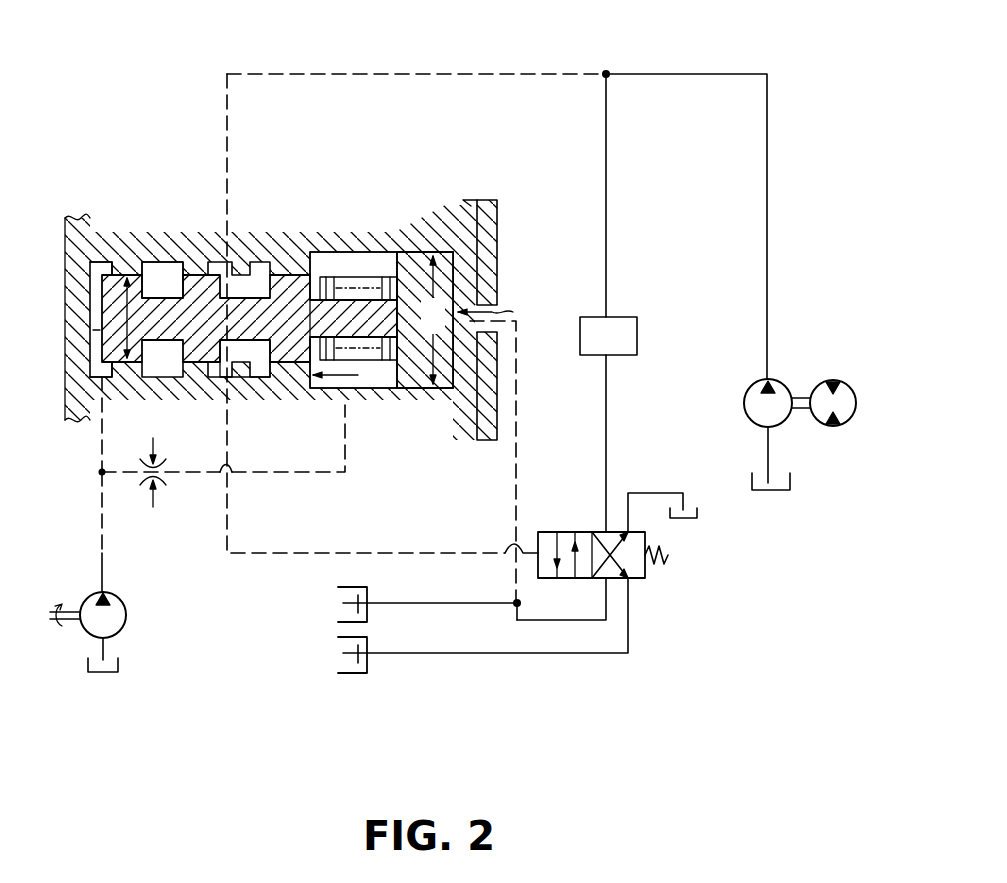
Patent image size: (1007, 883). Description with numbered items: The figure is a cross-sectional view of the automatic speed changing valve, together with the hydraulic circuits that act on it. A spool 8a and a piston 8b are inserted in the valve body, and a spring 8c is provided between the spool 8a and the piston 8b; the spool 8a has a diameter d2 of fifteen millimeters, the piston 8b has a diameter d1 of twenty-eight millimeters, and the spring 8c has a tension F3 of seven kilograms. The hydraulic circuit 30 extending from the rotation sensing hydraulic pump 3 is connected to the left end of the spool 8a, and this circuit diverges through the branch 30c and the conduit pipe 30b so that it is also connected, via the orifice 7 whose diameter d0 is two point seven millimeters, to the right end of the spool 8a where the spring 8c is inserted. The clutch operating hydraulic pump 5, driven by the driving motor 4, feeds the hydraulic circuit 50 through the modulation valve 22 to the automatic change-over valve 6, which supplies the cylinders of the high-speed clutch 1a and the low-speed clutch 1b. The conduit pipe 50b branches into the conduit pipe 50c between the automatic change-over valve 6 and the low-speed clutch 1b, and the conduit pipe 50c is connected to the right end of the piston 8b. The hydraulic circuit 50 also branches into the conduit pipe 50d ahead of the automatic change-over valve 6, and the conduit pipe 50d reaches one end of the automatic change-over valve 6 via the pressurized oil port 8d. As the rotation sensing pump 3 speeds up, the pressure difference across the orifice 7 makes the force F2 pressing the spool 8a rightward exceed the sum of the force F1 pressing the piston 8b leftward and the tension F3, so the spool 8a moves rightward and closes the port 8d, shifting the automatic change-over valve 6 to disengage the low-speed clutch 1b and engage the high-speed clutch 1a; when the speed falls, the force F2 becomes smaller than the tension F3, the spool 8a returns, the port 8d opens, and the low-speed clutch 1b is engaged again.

The high-speed clutch 1a is at (338, 673).
The low-speed clutch 1b is at (338, 618).
The rotation sensing hydraulic pump 3 is at (127, 612).
The clutch operating hydraulic pump driving motor 4 is at (843, 382).
The clutch operating hydraulic pump 5 is at (787, 386).
The automatic change-over valve 6 is at (582, 532).
The orifice 7 is at (158, 458).
The spool 8a is at (132, 276).
The piston 8b is at (430, 254).
The spring 8c is at (365, 278).
The pressurized oil port 8d is at (240, 380).
The modulation valve 22 is at (637, 345).
The hydraulic circuit 30 is at (98, 535).
The conduit pipe 30b is at (286, 474).
The branch line 30c is at (97, 460).
The hydraulic circuit 50 is at (682, 74).
The conduit pipe 50b is at (570, 622).
The conduit pipe 50c is at (522, 414).
The conduit pipe 50d is at (325, 74).
The force F1 is at (500, 301).
The force F2 is at (93, 330).
The tension of the spring F3 is at (351, 377).
The diameter of the orifice d0 is at (142, 524).
The diameter of the piston d1 is at (435, 320).
The diameter of the spool d2 is at (115, 318).